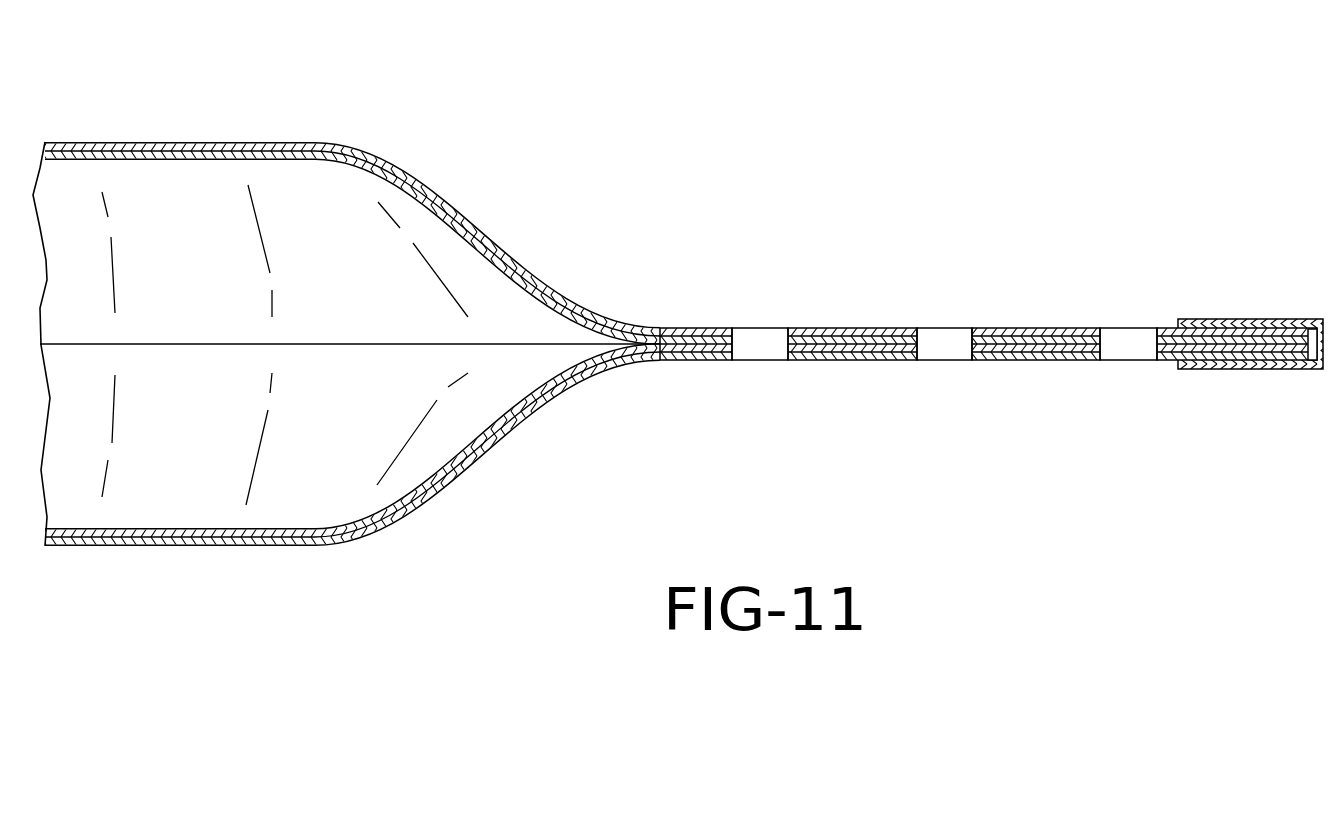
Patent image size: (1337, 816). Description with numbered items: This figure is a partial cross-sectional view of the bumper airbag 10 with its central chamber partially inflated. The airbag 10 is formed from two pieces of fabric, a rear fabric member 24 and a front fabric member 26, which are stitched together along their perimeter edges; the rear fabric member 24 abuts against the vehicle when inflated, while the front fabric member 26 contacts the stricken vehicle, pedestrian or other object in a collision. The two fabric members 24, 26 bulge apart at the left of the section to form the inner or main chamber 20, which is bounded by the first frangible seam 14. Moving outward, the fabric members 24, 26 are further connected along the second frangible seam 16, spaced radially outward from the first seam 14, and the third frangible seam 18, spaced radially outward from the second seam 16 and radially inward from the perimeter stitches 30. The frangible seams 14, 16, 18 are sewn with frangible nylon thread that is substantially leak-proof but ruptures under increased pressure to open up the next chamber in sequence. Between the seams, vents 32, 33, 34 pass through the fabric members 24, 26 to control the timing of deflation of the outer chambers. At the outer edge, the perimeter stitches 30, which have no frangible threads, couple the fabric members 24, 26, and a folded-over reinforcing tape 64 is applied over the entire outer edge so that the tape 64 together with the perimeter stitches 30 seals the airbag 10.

The bumper airbag 10 is at (500, 243).
The first frangible seam 14 is at (667, 338).
The second frangible seam 16 is at (852, 338).
The third frangible seam 18 is at (1033, 338).
The inner chamber 20 is at (177, 183).
The rear fabric member 24 is at (268, 547).
The front fabric member 26 is at (270, 142).
The perimeter stitches 30 is at (1283, 338).
The vent 32 is at (760, 348).
The vent 33 is at (947, 348).
The vent 34 is at (1128, 348).
The reinforcing tape 64 is at (1293, 370).